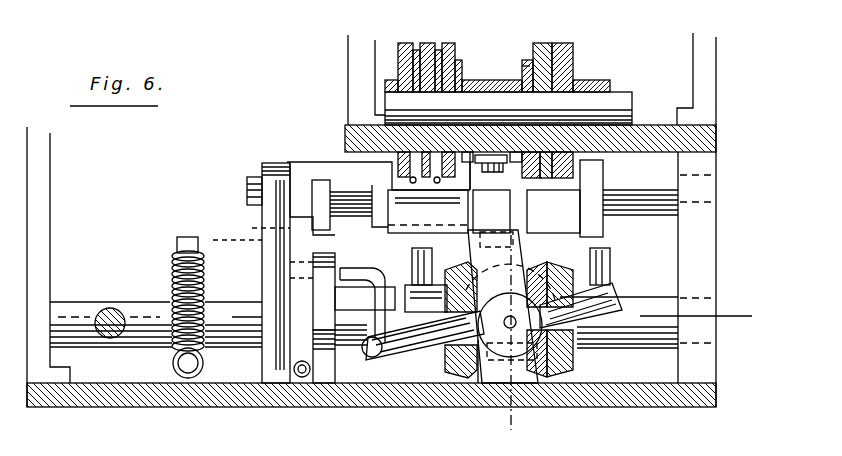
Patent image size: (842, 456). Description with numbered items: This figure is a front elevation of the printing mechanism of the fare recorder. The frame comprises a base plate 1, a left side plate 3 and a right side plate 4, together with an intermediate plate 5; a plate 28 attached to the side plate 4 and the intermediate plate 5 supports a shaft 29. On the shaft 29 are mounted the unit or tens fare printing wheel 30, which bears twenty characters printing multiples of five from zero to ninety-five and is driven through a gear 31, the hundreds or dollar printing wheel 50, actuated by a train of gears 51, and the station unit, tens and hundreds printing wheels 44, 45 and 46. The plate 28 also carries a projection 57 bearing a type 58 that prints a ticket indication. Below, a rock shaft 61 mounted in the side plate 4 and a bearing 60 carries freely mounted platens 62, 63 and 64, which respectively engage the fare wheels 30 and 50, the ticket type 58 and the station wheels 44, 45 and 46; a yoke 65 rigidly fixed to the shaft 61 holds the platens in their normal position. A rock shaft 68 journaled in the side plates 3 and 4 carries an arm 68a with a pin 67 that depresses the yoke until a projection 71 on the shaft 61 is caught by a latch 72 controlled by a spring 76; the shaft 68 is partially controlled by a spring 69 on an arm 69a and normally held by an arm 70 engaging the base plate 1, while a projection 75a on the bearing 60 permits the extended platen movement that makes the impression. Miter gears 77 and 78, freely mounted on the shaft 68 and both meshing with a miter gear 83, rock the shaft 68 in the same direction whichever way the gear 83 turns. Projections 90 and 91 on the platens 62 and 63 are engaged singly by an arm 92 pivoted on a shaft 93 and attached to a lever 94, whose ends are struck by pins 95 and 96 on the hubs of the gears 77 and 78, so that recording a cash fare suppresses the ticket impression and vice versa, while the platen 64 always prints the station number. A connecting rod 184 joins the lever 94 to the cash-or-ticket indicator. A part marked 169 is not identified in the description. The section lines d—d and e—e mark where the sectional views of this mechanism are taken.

The base plate 1 is at (190, 395).
The left side plate 3 is at (50, 232).
The right side plate 4 is at (703, 70).
The intermediate plate 5 is at (348, 63).
The plate 28 is at (697, 138).
The shaft 29 is at (622, 100).
The unit or tens printing wheel 30 is at (574, 62).
The gear 31 is at (575, 64).
The unit printing wheel 44 is at (448, 43).
The tens printing wheel 45 is at (427, 43).
The hundreds printing wheel 46 is at (405, 43).
The hundreds or dollar printing wheel 50 is at (530, 20).
The gears 51 is at (524, 68).
The projection 57 is at (492, 159).
The type 58 is at (490, 176).
The bearing 60 is at (278, 163).
The rock shaft 61 is at (247, 190).
The platen 62 is at (602, 198).
The platen 63 is at (491, 211).
The platen 64 is at (428, 211).
The yoke 65 is at (350, 206).
The pin 67 is at (290, 278).
The rock shaft 68 is at (147, 330).
The arm 68a is at (318, 262).
The spring 69 is at (172, 272).
The arm 69a is at (177, 242).
The arm 70 is at (325, 367).
The projection 71 is at (262, 228).
The latch 72 is at (290, 262).
The projection 75a is at (256, 240).
The spring 76 is at (298, 378).
The miter gear 77 is at (457, 372).
The miter gear 78 is at (578, 372).
The miter gear 83 is at (479, 352).
The projection 90 is at (522, 240).
The projection 91 is at (472, 262).
The arm 92 is at (510, 306).
The shaft 93 is at (548, 365).
The lever 94 is at (395, 356).
The pin 95 is at (412, 258).
The pin 96 is at (610, 258).
The roller 169 is at (110, 308).
The connecting rod 184 is at (375, 355).
The section line d— d is at (514, 245).
The section line e— e is at (411, 312).